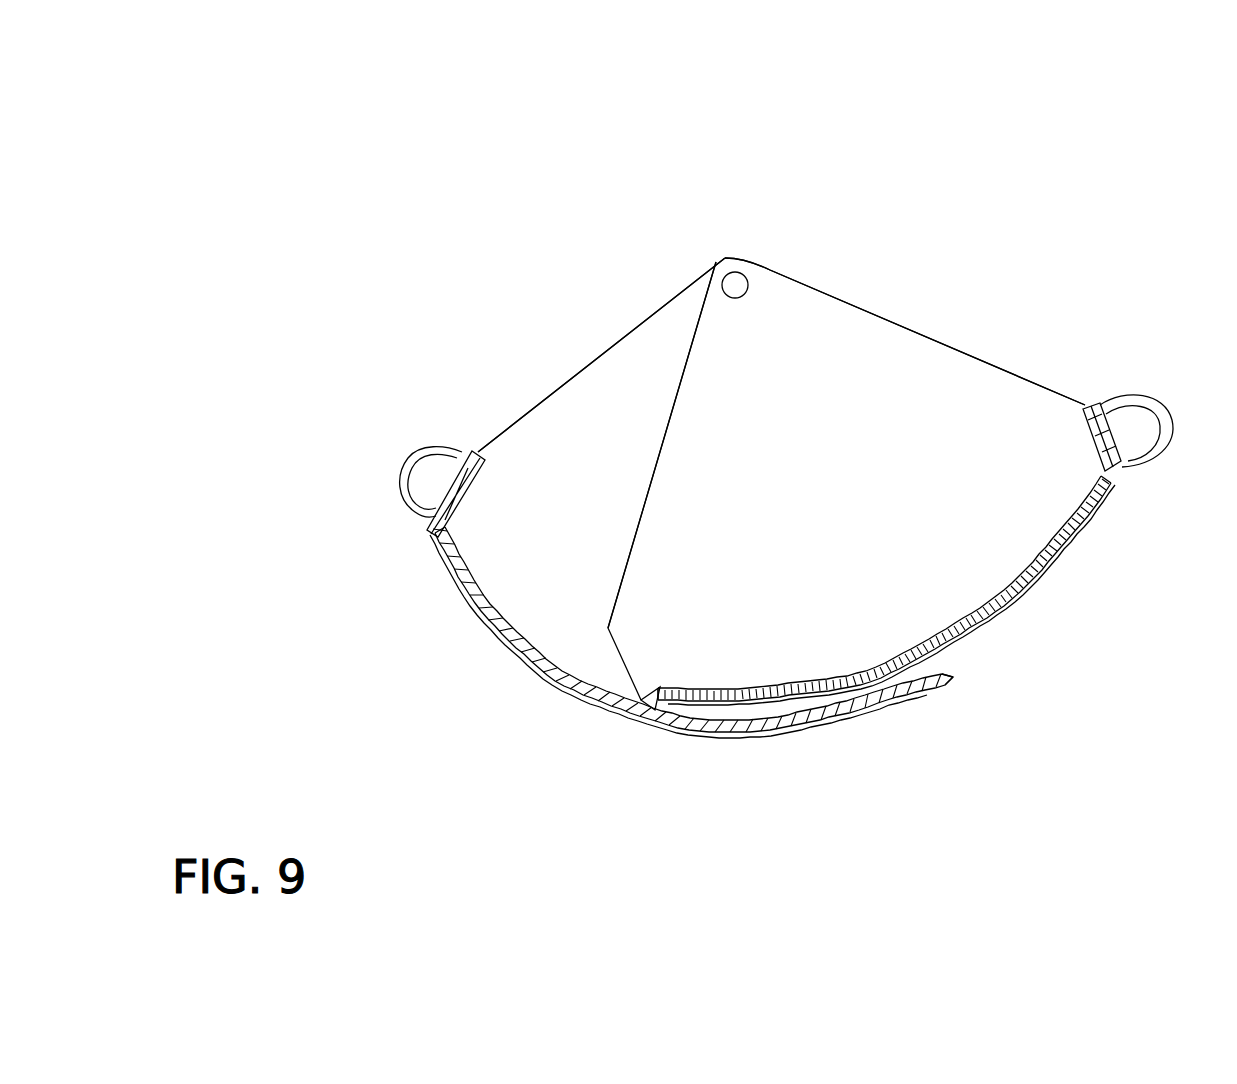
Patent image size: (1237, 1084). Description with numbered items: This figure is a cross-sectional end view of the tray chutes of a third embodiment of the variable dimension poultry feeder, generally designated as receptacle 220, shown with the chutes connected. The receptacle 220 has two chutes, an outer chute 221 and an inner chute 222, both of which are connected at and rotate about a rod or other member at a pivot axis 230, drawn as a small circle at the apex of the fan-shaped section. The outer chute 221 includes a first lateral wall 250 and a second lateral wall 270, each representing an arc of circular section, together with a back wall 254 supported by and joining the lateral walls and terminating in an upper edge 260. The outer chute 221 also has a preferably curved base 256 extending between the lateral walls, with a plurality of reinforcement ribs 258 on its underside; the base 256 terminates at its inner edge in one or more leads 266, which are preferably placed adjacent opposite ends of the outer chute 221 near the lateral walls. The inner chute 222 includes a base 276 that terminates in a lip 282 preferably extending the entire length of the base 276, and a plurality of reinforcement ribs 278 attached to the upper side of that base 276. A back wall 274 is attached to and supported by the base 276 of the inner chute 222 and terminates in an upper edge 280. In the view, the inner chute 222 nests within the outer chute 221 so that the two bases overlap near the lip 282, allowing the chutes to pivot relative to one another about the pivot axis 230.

The receptacle 220 is at (877, 208).
The outer chute 221 is at (652, 311).
The inner chute 222 is at (985, 366).
The pivot axis 230 is at (740, 258).
The first lateral wall 250 is at (562, 425).
The back wall 254 is at (450, 515).
The base 256 is at (522, 648).
The reinforcement ribs 258 is at (758, 742).
The upper edge 260 is at (478, 450).
The leads 266 is at (930, 690).
The second lateral wall 270 is at (908, 370).
The back wall 274 is at (1108, 440).
The base 276 is at (1008, 612).
The reinforcement ribs 278 is at (940, 655).
The upper edge 280 is at (1087, 403).
The lip 282 is at (653, 708).